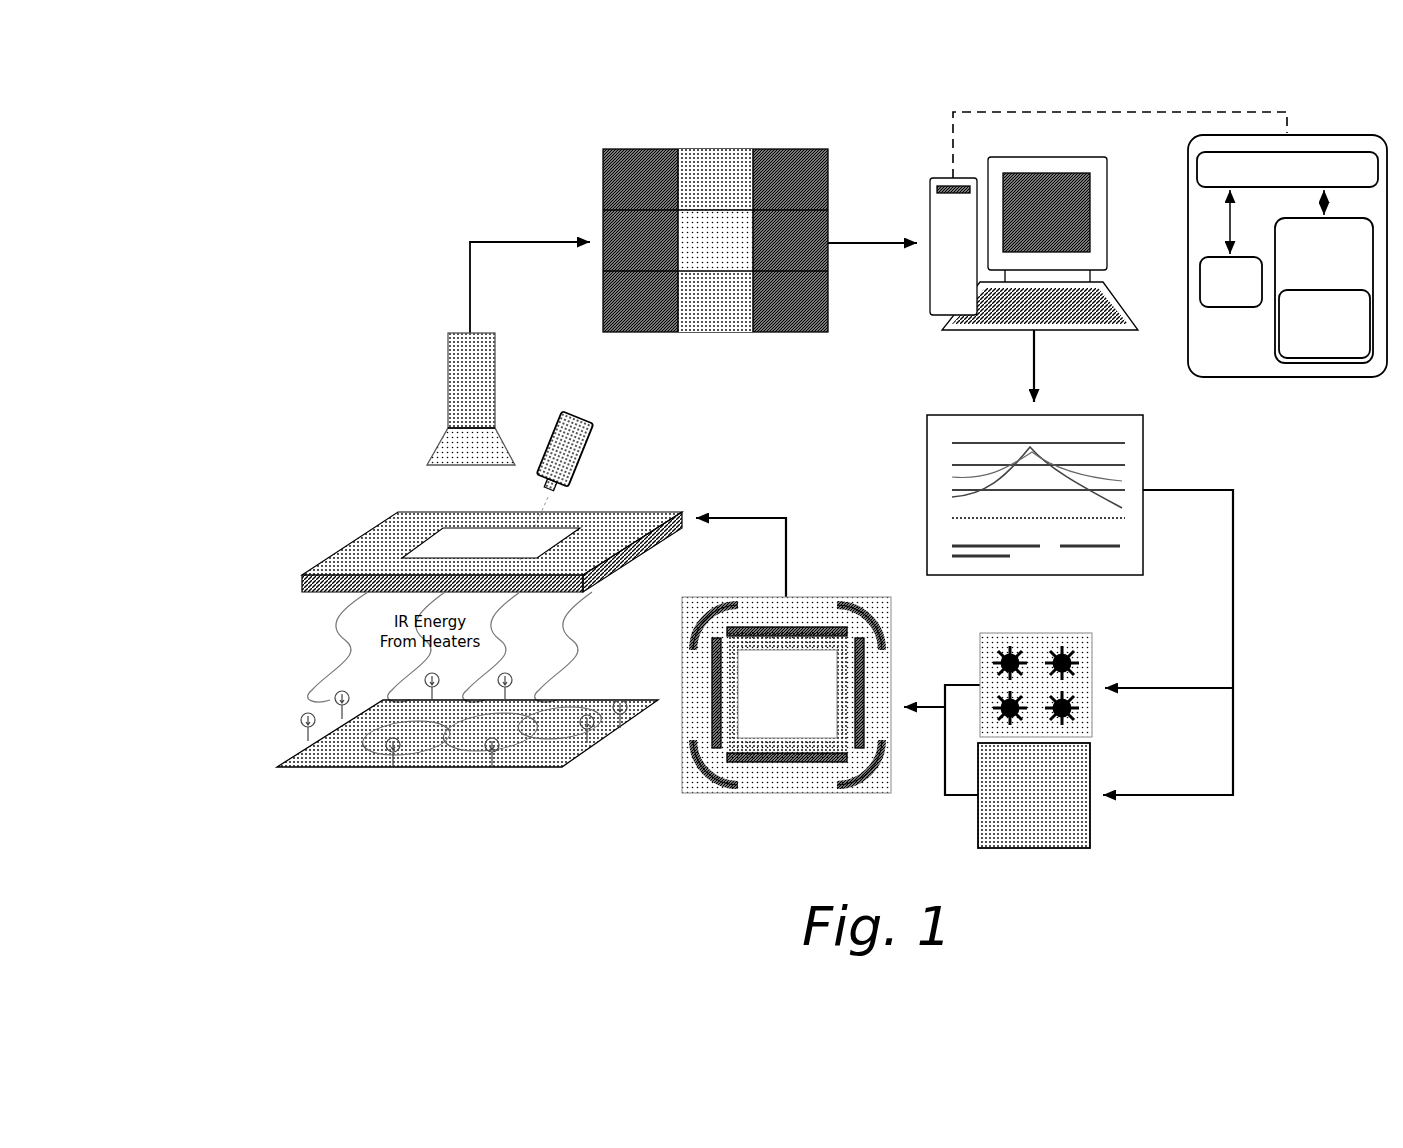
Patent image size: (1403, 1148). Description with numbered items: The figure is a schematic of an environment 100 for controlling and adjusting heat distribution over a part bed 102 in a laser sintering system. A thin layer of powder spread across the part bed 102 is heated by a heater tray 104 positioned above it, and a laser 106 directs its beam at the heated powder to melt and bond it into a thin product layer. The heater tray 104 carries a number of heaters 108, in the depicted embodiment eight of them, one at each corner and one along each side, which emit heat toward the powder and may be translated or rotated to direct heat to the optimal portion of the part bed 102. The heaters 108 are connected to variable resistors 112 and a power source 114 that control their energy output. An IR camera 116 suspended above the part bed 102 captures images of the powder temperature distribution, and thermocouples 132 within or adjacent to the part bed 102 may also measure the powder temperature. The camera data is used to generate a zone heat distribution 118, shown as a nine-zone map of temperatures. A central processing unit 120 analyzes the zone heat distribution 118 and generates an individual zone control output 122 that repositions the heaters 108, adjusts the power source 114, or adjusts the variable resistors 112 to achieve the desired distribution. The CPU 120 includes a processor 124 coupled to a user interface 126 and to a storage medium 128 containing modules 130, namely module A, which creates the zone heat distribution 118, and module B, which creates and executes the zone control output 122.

The environment 100 is at (326, 170).
The part bed 102 is at (425, 757).
The heater tray 104 is at (357, 557).
The laser 106 is at (583, 418).
The heaters 108 is at (714, 808).
The variable resistors 112 is at (1092, 662).
The power source 114 is at (1090, 848).
The IR camera 116 is at (441, 440).
The zone heat distribution 118 is at (638, 149).
The central processing unit 120 is at (1082, 325).
The individual zone control output 122 is at (1143, 458).
The processor 124 is at (1337, 180).
The user interface 126 is at (1217, 302).
The storage medium 128 is at (1310, 286).
The modules 130 is at (1310, 336).
The thermocouples 132 is at (592, 735).